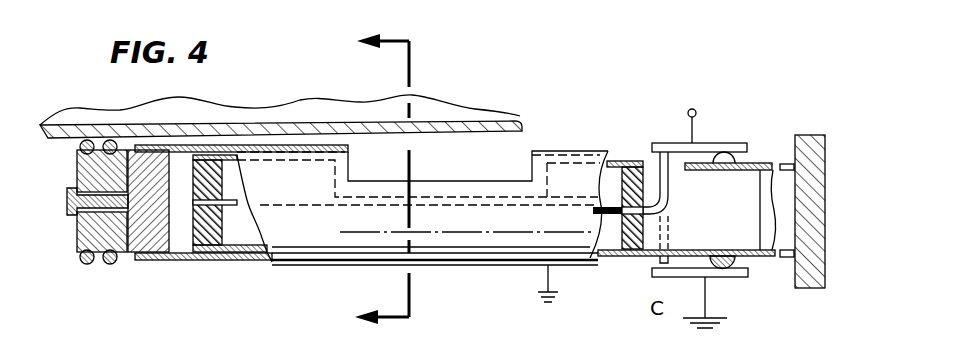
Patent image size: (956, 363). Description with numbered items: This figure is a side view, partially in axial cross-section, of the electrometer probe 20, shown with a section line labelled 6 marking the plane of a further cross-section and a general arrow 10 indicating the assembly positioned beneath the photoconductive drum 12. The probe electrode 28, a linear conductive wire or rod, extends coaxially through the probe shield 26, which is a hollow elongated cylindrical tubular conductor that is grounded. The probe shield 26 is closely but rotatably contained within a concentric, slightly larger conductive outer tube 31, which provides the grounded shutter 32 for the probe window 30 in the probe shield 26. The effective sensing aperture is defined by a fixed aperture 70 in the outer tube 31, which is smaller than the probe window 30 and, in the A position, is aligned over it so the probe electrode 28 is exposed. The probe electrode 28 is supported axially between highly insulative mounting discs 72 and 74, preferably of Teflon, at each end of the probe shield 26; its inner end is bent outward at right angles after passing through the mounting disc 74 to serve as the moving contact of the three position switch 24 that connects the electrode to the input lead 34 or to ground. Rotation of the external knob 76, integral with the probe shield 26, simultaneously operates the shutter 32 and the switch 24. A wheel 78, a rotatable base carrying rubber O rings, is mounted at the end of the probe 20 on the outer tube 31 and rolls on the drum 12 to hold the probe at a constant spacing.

The section line 6- 6 is at (368, 172).
The sensing apparatus 10 is at (503, 66).
The photoconductive drum 12 is at (505, 135).
The electrometer probe 20 is at (560, 135).
The three position switch 24 is at (743, 143).
The probe shield 26 is at (603, 258).
The probe electrode 28 is at (237, 205).
The probe window 30 is at (433, 195).
The outer tube 31 is at (308, 240).
The grounded shutter 32 is at (465, 244).
The input lead 34 is at (697, 109).
The fixed aperture 70 is at (370, 174).
The mounting disc 72 is at (187, 251).
The mounting disc 74 is at (696, 210).
The external knob 76 is at (808, 135).
The wheel 78 is at (77, 236).